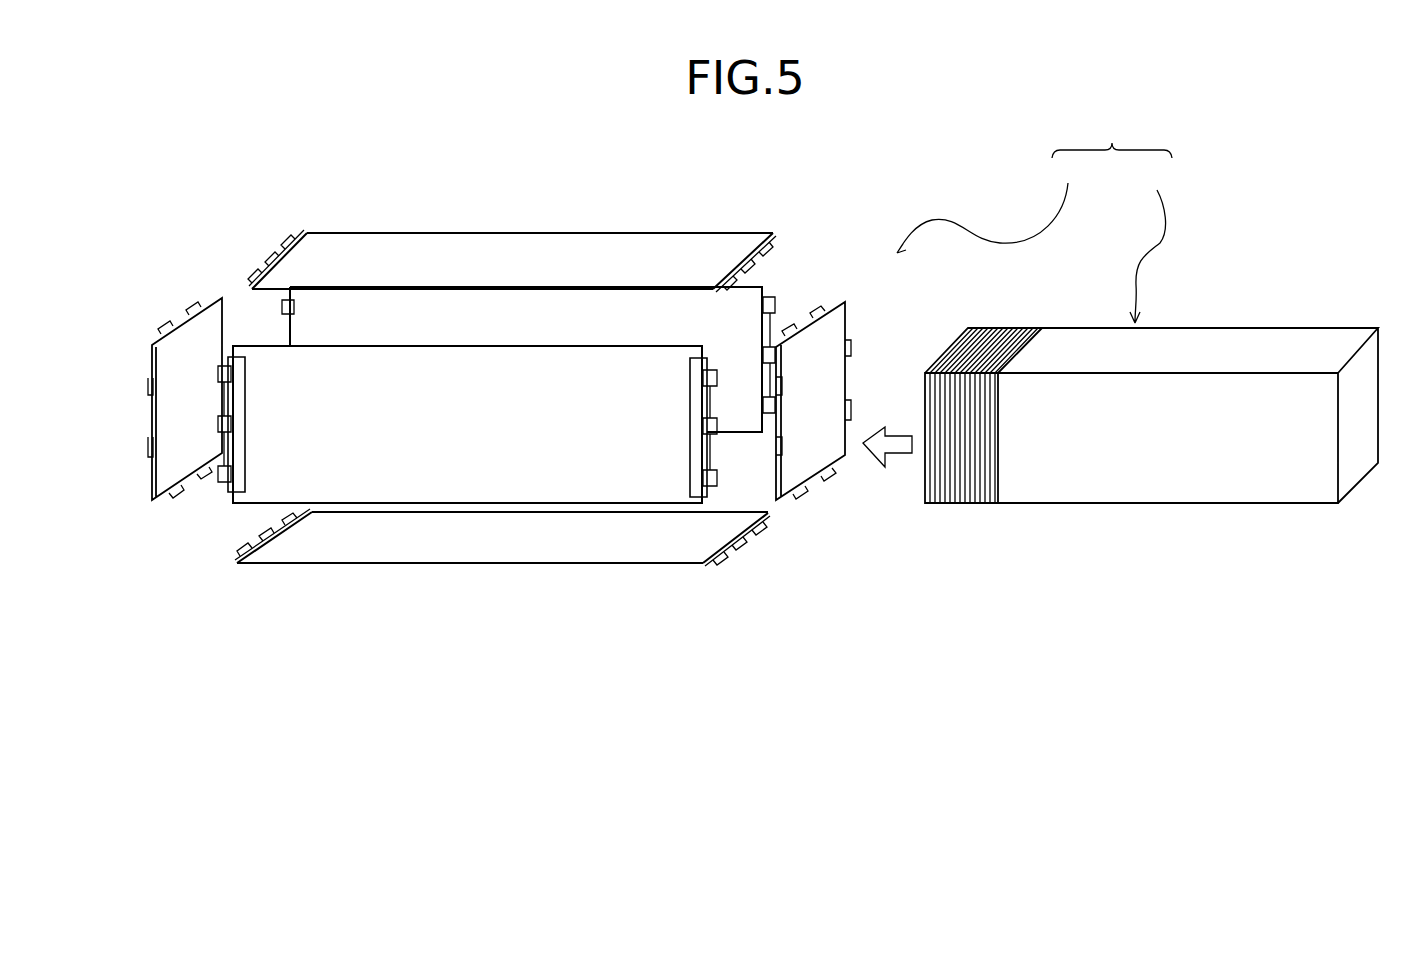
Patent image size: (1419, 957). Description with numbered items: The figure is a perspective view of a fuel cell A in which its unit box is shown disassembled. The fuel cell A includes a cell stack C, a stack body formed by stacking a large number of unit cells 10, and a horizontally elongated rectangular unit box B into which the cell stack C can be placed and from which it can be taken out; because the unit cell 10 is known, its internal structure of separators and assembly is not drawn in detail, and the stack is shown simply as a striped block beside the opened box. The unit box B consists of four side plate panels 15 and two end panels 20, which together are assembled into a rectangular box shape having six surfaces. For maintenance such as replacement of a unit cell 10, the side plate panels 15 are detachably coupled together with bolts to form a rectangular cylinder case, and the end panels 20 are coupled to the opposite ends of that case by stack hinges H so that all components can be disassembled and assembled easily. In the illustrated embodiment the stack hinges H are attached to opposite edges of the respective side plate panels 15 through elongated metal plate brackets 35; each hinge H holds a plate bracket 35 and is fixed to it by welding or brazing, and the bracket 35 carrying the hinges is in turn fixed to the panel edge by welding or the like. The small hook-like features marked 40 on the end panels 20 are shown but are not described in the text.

The unit cell 10 is at (988, 480).
The side plate panel 15 is at (557, 312).
The end panel 20 is at (208, 334).
The plate bracket 35 is at (300, 251).
The hooks 40 is at (200, 308).
The stack hinge H is at (278, 248).
The fuel cell A is at (1112, 136).
The unit box B is at (989, 205).
The cell stack C is at (1148, 240).